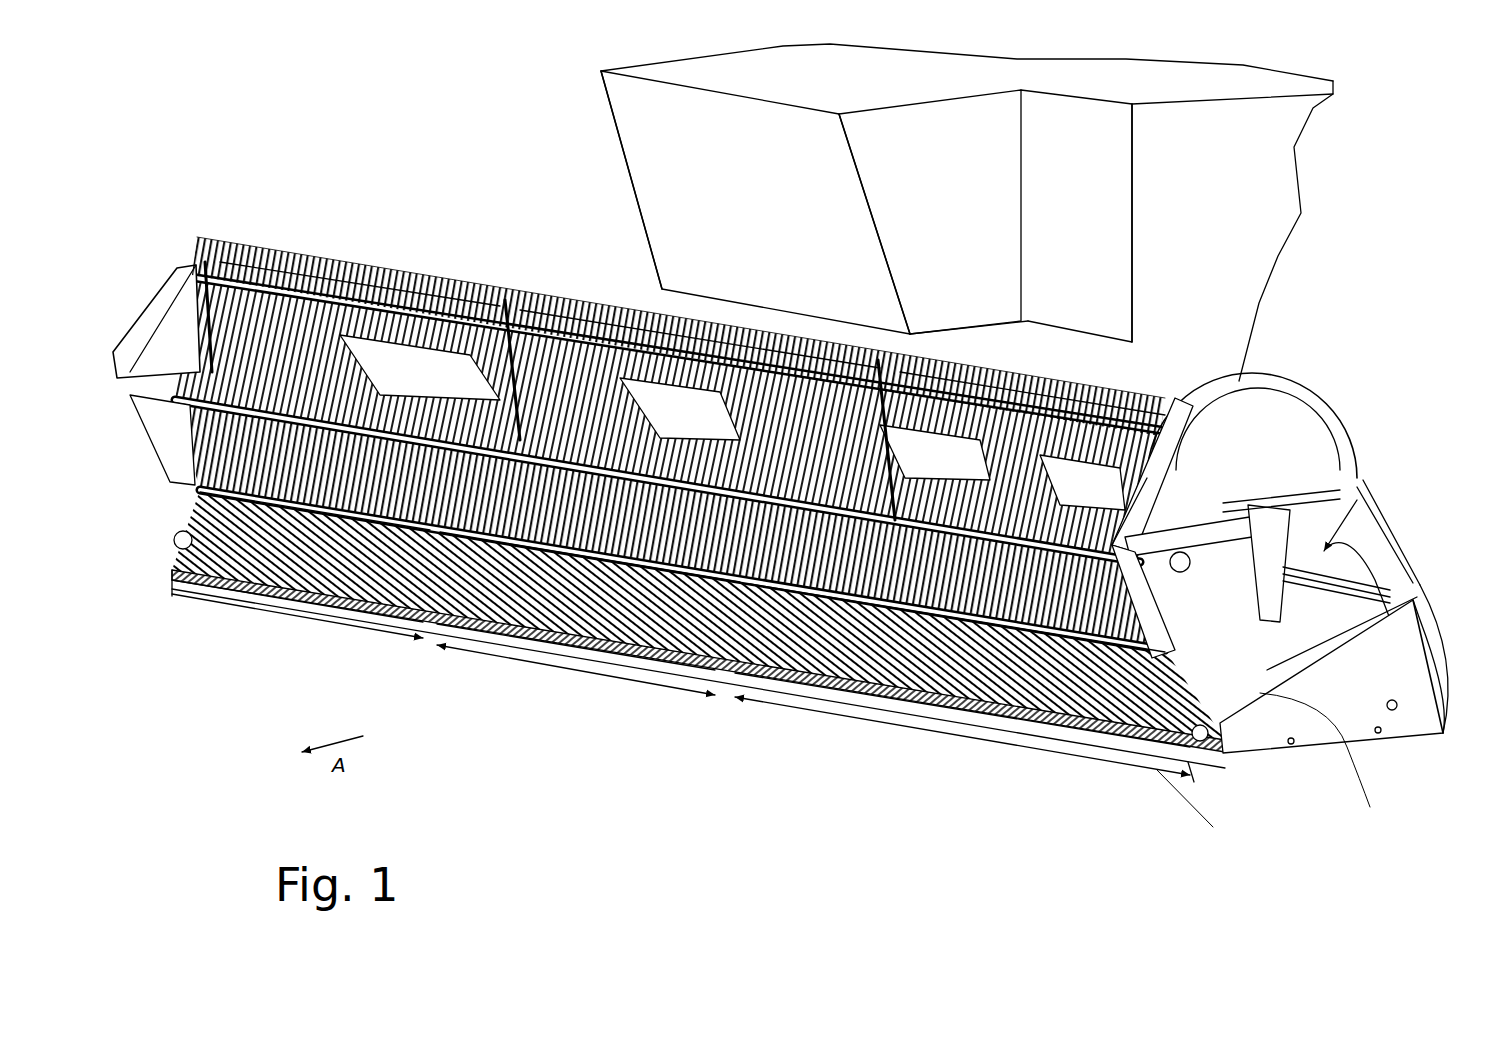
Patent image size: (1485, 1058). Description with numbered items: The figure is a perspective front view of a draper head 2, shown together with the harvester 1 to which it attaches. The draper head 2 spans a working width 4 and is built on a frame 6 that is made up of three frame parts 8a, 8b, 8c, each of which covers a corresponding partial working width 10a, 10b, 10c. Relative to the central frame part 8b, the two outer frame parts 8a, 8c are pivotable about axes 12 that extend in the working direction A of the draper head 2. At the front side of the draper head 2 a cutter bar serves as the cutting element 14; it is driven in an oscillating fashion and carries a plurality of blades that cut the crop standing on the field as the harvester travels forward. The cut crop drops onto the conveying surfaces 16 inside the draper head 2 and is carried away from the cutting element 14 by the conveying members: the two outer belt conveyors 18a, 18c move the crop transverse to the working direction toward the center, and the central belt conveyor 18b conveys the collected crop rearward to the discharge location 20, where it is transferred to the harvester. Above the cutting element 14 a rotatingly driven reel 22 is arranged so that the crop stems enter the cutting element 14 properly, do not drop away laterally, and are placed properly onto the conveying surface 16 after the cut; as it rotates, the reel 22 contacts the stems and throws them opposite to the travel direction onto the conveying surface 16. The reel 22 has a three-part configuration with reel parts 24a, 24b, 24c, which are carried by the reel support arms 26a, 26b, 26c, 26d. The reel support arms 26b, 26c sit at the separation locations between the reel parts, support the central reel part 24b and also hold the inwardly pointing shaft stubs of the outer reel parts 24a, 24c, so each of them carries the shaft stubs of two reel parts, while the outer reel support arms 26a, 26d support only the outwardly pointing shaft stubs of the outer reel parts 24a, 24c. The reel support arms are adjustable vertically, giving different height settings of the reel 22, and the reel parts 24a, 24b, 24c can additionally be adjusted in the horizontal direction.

The combine harvester 1 is at (1249, 245).
The draper head 2 is at (1378, 414).
The working width 4 is at (1157, 770).
The frame 6 is at (1410, 603).
The frame part 8a is at (414, 216).
The frame part 8b is at (759, 288).
The frame part 8c is at (1141, 345).
The partial working width 10a is at (253, 610).
The partial working width 10b is at (600, 673).
The partial working width 10c is at (955, 745).
The axes 12 is at (460, 630).
The cutting element 14 is at (1010, 725).
The conveying surfaces 16 is at (1332, 721).
The belt conveyor 18a is at (390, 607).
The belt conveyor 18b is at (750, 670).
The belt conveyor 18c is at (1005, 725).
The discharge location 20 is at (934, 348).
The reel 22 is at (616, 264).
The reel part 24a is at (321, 255).
The reel part 24b is at (730, 388).
The reel part 24c is at (1075, 468).
The reel support arm 26a is at (215, 232).
The reel support arm 26b is at (500, 292).
The reel support arm 26c is at (880, 395).
The reel support arm 26d is at (1283, 500).